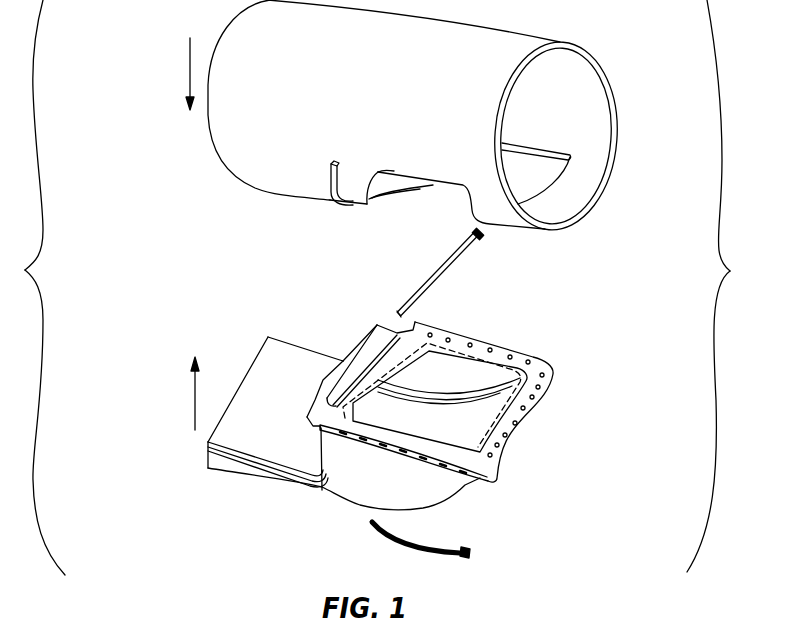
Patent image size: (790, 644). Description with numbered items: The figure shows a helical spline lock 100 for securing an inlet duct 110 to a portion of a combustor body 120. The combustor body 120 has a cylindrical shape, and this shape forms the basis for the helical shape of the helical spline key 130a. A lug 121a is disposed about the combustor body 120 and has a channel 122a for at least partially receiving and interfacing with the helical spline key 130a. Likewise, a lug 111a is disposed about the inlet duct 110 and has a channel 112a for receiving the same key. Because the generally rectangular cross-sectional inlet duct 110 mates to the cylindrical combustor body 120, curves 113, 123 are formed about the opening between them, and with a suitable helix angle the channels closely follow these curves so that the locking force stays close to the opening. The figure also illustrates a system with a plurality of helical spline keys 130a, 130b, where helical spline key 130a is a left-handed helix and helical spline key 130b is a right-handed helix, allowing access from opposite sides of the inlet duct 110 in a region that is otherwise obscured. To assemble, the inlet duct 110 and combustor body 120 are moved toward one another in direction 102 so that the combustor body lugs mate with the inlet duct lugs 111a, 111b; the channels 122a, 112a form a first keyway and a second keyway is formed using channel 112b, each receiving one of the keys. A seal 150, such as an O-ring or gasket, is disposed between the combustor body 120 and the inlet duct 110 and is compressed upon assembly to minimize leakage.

The helical spline lock 100 is at (182, 254).
The direction 102 is at (190, 70).
The inlet duct 110 is at (553, 374).
The lug 111a is at (312, 421).
The inlet duct lug 111b is at (370, 345).
The channel 112a is at (329, 409).
The channel 112b is at (347, 359).
The curve 113 is at (420, 373).
The combustor body 120 is at (597, 56).
The lug 121a is at (333, 203).
The channel 122a is at (350, 205).
The curve 123 is at (395, 185).
The helical spline key 130a is at (447, 558).
The helical spline key 130b is at (452, 259).
The seal 150 is at (513, 418).